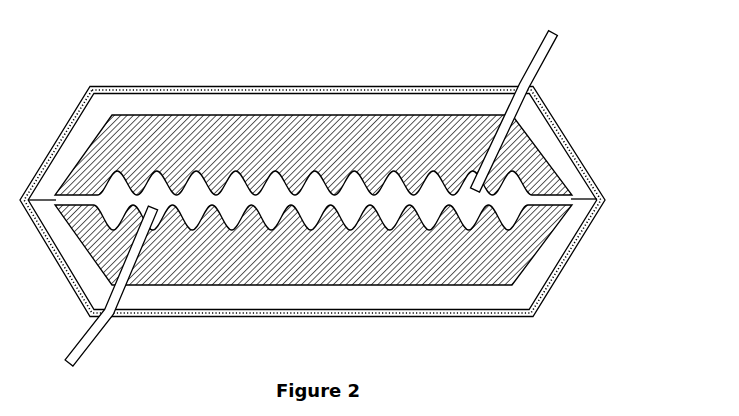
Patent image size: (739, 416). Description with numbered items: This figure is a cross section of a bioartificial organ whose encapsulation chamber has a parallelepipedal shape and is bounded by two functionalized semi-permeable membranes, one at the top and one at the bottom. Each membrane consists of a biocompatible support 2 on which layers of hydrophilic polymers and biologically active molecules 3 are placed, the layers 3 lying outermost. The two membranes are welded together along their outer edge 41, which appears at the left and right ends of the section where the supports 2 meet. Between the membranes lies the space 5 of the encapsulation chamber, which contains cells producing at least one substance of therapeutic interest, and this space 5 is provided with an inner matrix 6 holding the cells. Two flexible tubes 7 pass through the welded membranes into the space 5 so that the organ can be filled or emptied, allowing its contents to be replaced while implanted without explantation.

The biocompatible support 2 is at (182, 104).
The layers of hydrophilic polymer and biologically active molecule 3 is at (252, 88).
The outer edge 41 is at (583, 197).
The space of the encapsulation chamber 5 is at (385, 204).
The inner matrix 6 is at (358, 138).
The flexible tubes 7 is at (536, 63).